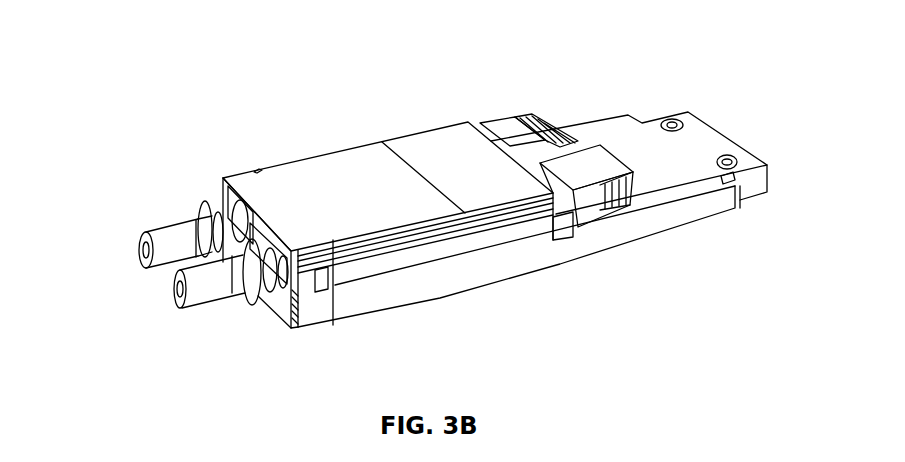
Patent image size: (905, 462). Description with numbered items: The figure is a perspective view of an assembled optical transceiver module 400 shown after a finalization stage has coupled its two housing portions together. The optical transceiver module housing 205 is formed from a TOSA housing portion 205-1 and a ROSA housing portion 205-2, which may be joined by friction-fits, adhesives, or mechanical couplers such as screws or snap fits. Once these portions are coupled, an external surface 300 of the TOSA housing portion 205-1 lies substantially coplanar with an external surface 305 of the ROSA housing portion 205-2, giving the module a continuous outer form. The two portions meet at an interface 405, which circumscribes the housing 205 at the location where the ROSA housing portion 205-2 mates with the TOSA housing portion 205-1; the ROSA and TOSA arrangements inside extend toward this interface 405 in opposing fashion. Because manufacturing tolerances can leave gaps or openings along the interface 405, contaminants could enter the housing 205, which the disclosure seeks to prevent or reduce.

The optical transceiver module 400 is at (204, 102).
The optical transceiver module housing 205 is at (143, 165).
The TOSA housing portion 205-1 is at (303, 310).
The ROSA housing portion 205-2 is at (247, 181).
The external surface of the TOSA housing portion 300 is at (530, 260).
The external surface of the ROSA housing portion 305 is at (537, 225).
The interface 405 is at (367, 277).